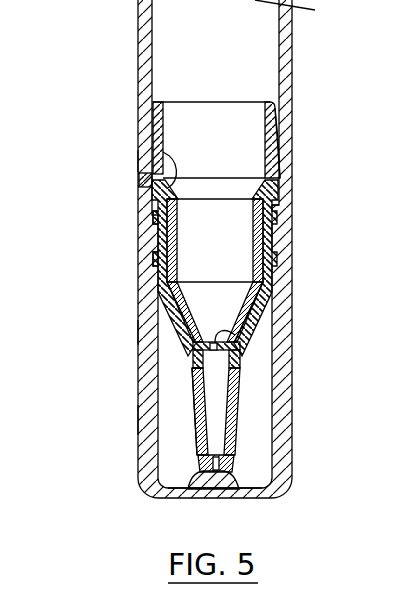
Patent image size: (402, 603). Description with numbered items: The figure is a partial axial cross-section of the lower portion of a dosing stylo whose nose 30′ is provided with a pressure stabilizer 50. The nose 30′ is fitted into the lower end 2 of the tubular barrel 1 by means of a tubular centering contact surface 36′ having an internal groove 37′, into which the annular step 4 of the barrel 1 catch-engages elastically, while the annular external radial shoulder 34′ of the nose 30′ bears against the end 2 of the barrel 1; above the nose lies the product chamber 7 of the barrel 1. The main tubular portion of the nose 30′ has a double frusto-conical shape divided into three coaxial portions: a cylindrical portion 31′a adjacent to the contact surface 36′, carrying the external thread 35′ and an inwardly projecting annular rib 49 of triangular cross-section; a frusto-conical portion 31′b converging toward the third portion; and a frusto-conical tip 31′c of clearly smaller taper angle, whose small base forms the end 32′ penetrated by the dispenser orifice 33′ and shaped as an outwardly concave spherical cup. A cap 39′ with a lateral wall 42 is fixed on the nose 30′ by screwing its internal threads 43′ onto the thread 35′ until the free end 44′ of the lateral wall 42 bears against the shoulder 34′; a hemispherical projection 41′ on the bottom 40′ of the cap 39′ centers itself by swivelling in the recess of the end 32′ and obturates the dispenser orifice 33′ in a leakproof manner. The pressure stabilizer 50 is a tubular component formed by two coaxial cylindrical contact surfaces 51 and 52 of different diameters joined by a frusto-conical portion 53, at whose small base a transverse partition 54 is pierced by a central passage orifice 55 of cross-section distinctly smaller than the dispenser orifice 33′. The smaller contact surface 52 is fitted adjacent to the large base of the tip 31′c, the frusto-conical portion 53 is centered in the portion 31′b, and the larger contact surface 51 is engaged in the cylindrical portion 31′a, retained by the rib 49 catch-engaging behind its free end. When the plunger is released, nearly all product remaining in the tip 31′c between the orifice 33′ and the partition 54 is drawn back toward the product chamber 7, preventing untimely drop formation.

The tubular barrel 1 is at (150, 26).
The product chamber 7 is at (180, 62).
The annular step 4 is at (153, 132).
The annular rib 49 is at (156, 157).
The lower end of the barrel 2 is at (148, 165).
The annular external radial shoulder 34′ is at (142, 178).
The threads of the cap's internal thread system 43′ is at (155, 214).
The external thread 35′ is at (153, 258).
The transverse partition 54 is at (160, 293).
The lateral wall of the cap 42 is at (152, 336).
The nose 30′ is at (178, 369).
The cap 39′ is at (128, 420).
The dispenser orifice 33′ is at (190, 442).
The end of the nose 32′ is at (217, 455).
The projection 41′ is at (197, 491).
The internal groove 37′ is at (280, 112).
The tubular centering contact surface 36′ is at (280, 153).
The free end of the lateral wall 44′ is at (287, 190).
The larger-diameter contact surface 51 is at (276, 212).
The cylindrical portion 31′a is at (267, 242).
The frusto-conical portion 53 is at (262, 302).
The frusto-conical portion of the nose 31′b is at (250, 337).
The central passage orifice 55 is at (243, 334).
The smaller-diameter contact surface 52 is at (242, 358).
The frusto-conical tip 31′c is at (238, 408).
The bottom of the cap 40′ is at (258, 498).
The pressure stabilizer 50 is at (245, 246).